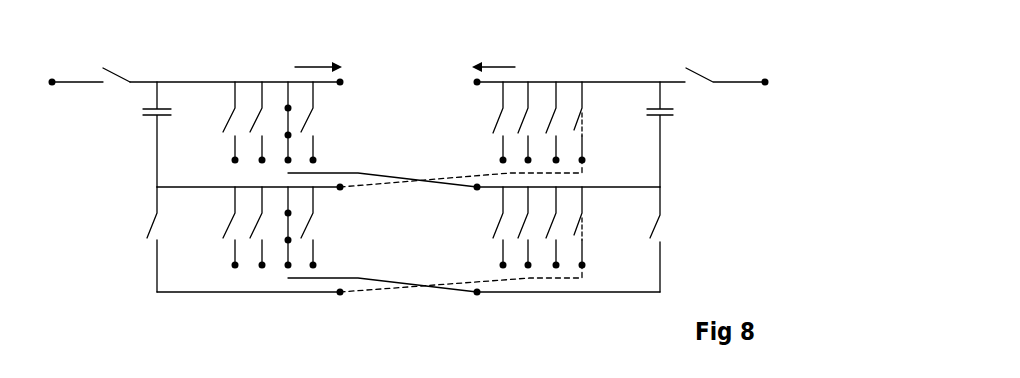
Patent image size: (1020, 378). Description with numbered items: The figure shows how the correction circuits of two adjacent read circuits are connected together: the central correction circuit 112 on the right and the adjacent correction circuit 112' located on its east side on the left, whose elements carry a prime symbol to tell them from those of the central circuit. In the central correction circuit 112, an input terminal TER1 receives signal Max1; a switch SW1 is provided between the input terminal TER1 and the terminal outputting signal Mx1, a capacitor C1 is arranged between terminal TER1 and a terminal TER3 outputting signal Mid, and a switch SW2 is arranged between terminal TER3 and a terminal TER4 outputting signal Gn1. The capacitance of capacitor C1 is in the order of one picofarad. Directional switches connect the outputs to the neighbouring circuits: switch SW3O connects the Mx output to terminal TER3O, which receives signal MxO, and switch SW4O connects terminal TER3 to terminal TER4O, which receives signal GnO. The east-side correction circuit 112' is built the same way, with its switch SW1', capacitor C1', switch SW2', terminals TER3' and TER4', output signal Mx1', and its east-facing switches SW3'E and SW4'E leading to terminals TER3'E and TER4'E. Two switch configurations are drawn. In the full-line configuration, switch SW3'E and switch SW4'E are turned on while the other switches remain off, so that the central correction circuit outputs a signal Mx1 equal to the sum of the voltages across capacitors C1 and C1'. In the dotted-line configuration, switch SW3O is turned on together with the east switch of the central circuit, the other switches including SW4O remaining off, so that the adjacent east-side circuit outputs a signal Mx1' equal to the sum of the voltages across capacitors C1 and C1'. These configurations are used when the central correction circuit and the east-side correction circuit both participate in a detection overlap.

The correction circuit 112 is at (528, 168).
The correction circuit (east side) 112' is at (316, 167).
The switch SW1 is at (727, 63).
The switch (east side) SW1' is at (113, 63).
The switch SW2 is at (696, 239).
The switch (east side) SW2' is at (126, 239).
The capacitor C1 is at (683, 134).
The capacitor (east side) C1' is at (133, 134).
The output signal Mx1 is at (494, 58).
The output signal (east side) Mx1' is at (321, 58).
The input terminal TER1 is at (476, 83).
The east switch (east-side circuit) SW3'E is at (260, 102).
The west switch SW3O is at (582, 126).
The east switch (east-side circuit) SW4'E is at (239, 226).
The west switch SW4O is at (582, 230).
The east terminal (east-side circuit) TER3'E is at (238, 159).
The west terminal TER3O is at (620, 163).
The east terminal (east-side circuit) TER4'E is at (238, 265).
The west terminal TER4O is at (620, 268).
The terminal (east side) TER3' is at (369, 190).
The terminal TER3 is at (474, 197).
The terminal (east side) TER4' is at (369, 295).
The terminal TER4 is at (474, 302).